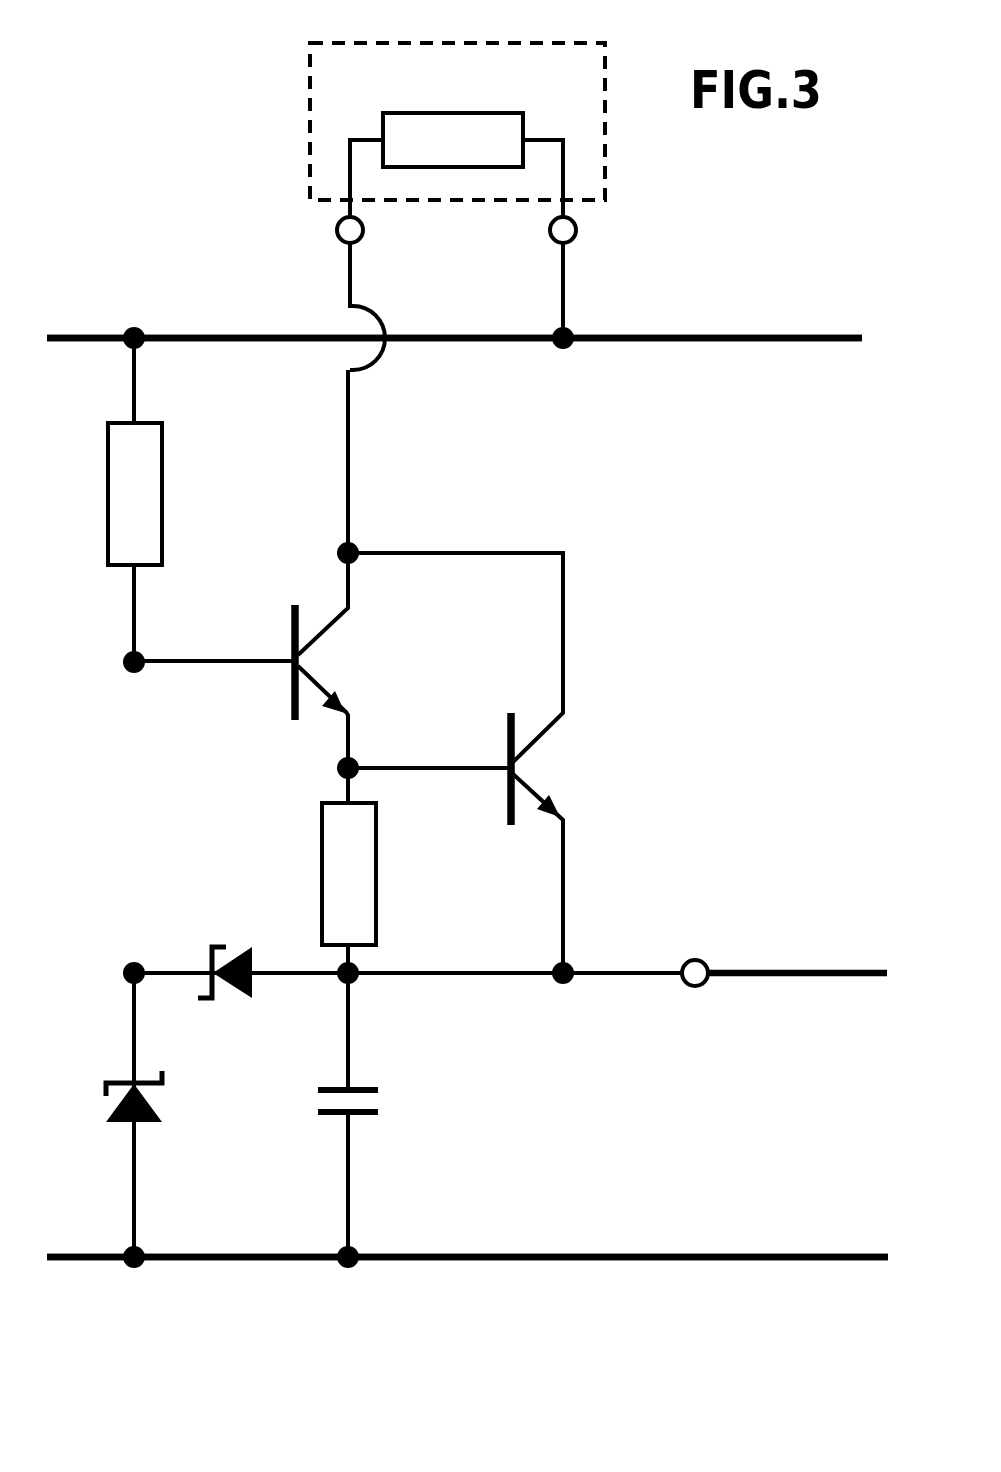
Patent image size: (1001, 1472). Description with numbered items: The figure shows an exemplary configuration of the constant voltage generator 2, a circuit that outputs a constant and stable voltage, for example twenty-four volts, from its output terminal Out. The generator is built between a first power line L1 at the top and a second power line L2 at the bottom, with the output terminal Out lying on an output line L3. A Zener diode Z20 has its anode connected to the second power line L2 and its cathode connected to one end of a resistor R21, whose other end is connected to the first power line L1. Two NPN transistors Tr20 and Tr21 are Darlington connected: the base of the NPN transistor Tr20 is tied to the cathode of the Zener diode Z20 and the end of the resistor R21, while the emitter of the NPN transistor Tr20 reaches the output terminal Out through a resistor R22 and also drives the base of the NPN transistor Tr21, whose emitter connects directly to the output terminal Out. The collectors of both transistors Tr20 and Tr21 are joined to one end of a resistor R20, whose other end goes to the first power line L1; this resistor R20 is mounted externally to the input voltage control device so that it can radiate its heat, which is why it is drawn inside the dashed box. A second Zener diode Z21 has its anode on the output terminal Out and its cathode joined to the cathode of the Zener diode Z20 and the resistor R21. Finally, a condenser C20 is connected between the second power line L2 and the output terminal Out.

The constant voltage generator 2 is at (205, 97).
The resistor R20 is at (457, 206).
The resistor R21 is at (135, 505).
The resistor R22 is at (349, 876).
The NPN transistor Tr20 is at (265, 660).
The NPN transistor Tr21 is at (473, 768).
The Zener diode Z20 is at (94, 1120).
The Zener diode Z21 is at (191, 939).
The condenser C20 is at (308, 1120).
The first power line L1 is at (728, 335).
The second power line L2 is at (596, 1260).
The output line L3 is at (797, 970).
The output terminal Out is at (697, 944).